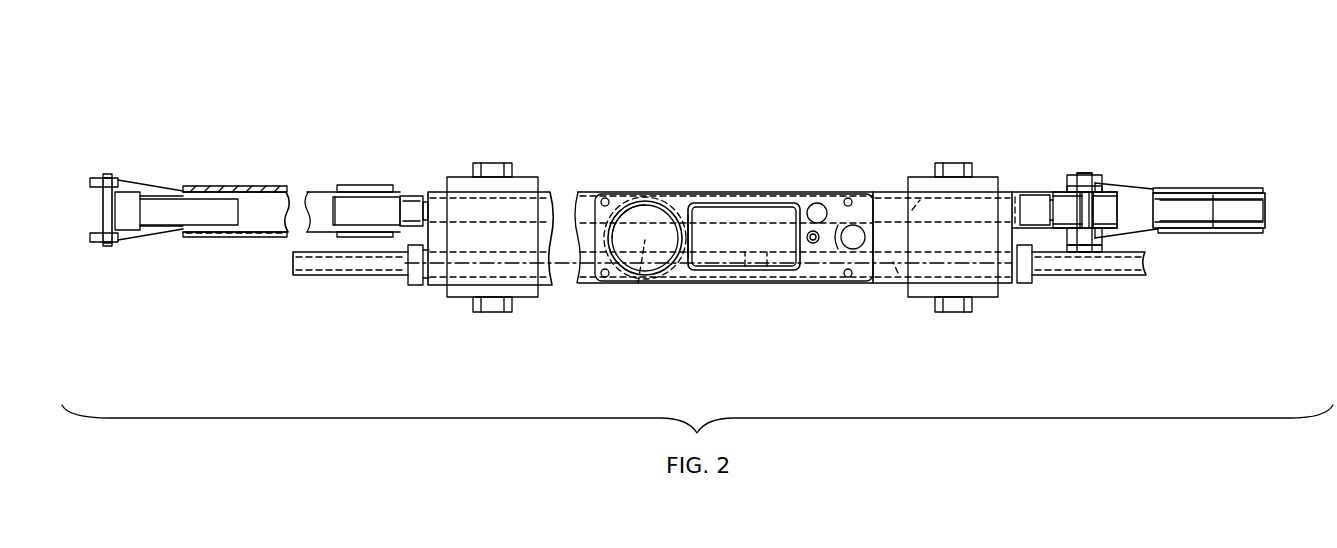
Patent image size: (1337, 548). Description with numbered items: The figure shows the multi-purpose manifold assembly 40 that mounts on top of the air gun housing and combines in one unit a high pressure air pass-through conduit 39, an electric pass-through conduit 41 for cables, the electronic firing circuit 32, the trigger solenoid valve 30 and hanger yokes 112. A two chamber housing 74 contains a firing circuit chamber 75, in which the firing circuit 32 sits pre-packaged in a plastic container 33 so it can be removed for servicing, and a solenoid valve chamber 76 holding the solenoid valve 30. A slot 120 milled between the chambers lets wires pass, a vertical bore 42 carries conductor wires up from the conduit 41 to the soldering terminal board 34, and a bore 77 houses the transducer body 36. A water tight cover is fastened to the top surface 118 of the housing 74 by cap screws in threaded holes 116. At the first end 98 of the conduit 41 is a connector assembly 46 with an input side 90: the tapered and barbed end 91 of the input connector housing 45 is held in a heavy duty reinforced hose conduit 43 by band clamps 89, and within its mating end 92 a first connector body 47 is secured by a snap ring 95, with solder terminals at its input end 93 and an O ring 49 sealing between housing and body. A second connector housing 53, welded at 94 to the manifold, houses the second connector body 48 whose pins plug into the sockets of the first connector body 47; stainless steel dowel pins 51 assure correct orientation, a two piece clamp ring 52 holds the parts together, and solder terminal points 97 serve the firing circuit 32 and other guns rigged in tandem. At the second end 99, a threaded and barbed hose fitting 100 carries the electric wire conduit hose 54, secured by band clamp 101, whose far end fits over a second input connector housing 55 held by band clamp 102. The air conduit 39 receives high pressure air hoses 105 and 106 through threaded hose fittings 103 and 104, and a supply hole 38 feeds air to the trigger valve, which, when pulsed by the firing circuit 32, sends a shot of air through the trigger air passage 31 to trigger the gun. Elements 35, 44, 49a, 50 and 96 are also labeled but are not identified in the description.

The trigger solenoid valve 30 is at (606, 275).
The trigger air passage 31 is at (623, 271).
The electronic firing circuit 32 is at (767, 262).
The plastic container 33 is at (703, 206).
The soldering terminal board 34 is at (783, 258).
The rectangular opening 35 is at (695, 266).
The transducer body 36 is at (819, 244).
The trigger valve high pressure air supply hole 38 is at (638, 284).
The high pressure air pass-through conduit 39 is at (990, 275).
The multi-purpose manifold assembly 40 is at (722, 221).
The electric pass-through conduit 41 is at (912, 210).
The vertical bore 42 is at (815, 202).
The heavy duty reinforced hose conduit 43 is at (1258, 193).
The rod end 44 is at (1249, 216).
The input connector housing 45 is at (1156, 189).
The connector assembly 46 is at (1099, 185).
The first connector body 47 is at (1118, 229).
The second connector body 48 is at (1080, 251).
The O ring 49 is at (1130, 151).
The bearing inner race 49a is at (1087, 185).
The spacer 50 is at (1101, 187).
The stainless steel dowel pins 51 is at (1075, 185).
The two piece clamp ring 52 is at (1080, 185).
The second connector housing 53 is at (1046, 230).
The electric wire conduit hose 54 is at (308, 190).
The second input connector housing 55 is at (150, 178).
The two chamber housing 74 is at (898, 273).
The firing circuit chamber 75 is at (745, 262).
The solenoid valve chamber 76 is at (623, 270).
The bore 77 is at (849, 278).
The band clamps 89 is at (1228, 193).
The input side 90 is at (1234, 176).
The tapered and barbed end 91 is at (1194, 201).
The mating end 92 is at (1147, 171).
The input end 93 is at (1121, 213).
The weld 94 is at (1015, 197).
The snap ring 95 is at (1091, 185).
The bolt 96 is at (1083, 185).
The solder terminal points 97 is at (1042, 200).
The first end 98 is at (957, 76).
The second end 99 is at (735, 244).
The threaded and barbed hose fitting 100 is at (405, 195).
The band clamp 101 is at (345, 186).
The band clamp 102 is at (200, 187).
The threaded hose fitting 103 is at (1107, 348).
The threaded hose fitting 104 is at (418, 288).
The high pressure air hose 105 is at (1134, 342).
The high pressure air hose 106 is at (353, 278).
The hanger yokes 112 is at (470, 299).
The threaded holes 116 is at (590, 274).
The top surface 118 is at (627, 195).
The slot 120 is at (697, 203).